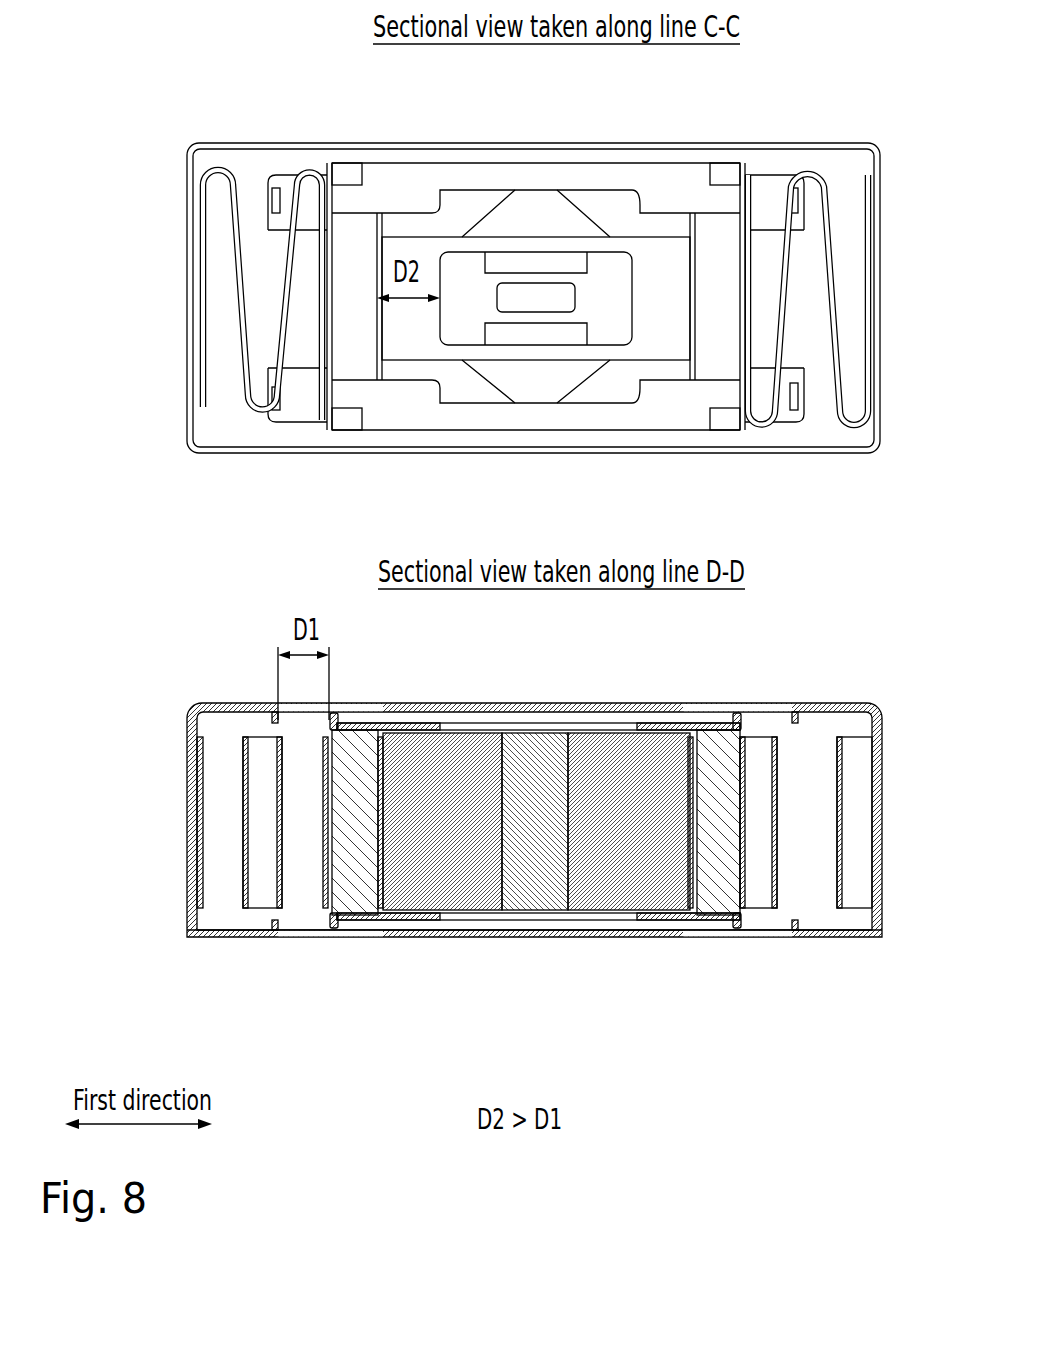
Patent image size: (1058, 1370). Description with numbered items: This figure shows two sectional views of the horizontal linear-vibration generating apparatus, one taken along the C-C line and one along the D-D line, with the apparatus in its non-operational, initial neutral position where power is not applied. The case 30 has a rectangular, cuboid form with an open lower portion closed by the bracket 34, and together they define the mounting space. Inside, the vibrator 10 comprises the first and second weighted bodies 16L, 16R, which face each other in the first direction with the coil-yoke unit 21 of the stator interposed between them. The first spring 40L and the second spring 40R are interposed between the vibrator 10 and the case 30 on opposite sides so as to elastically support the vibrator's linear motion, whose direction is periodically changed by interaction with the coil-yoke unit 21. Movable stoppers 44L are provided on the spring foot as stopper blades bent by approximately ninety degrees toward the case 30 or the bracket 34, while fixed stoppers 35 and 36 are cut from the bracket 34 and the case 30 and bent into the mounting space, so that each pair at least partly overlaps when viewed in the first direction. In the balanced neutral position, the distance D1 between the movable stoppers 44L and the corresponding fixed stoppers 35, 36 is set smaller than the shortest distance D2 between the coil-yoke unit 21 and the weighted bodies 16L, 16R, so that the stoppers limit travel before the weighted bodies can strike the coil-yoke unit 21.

The vibrator 10 is at (611, 940).
The first weighted body 16L is at (347, 333).
The second weighted body 16R is at (727, 330).
The coil-yoke unit 21 is at (566, 240).
The case 30 is at (860, 704).
The bracket 34 is at (208, 938).
The fixed stopper 35 is at (283, 932).
The fixed stopper 36 is at (268, 722).
The first spring 40L is at (243, 317).
The second spring 40R is at (832, 262).
The movable stopper 44L is at (337, 720).